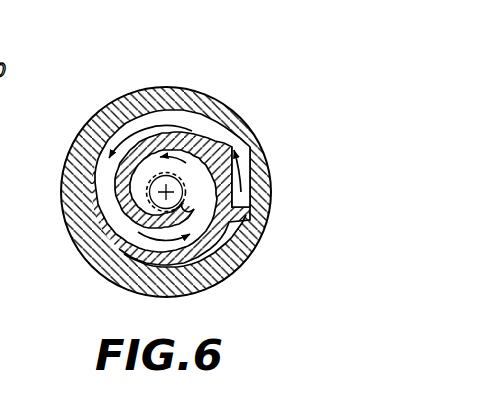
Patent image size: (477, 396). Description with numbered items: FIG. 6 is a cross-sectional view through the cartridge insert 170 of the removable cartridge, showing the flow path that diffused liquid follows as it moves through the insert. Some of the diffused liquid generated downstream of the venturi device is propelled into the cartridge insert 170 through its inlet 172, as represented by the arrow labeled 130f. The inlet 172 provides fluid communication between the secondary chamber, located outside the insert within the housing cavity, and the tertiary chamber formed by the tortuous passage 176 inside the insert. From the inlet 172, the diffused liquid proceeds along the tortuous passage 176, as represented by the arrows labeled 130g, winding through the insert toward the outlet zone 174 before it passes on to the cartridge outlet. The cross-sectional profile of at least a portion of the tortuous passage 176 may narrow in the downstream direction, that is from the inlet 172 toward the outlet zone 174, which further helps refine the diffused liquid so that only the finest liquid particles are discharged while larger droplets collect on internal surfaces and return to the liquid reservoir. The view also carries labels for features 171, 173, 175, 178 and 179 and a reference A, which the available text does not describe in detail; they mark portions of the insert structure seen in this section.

The cartridge insert 170 is at (269, 88).
The housing 171 is at (82, 193).
The inlet 172 is at (278, 173).
The spiral wall 173 is at (258, 150).
The outlet zone 174 is at (143, 187).
The central shaft 175 is at (118, 213).
The tortuous passage 176 is at (228, 145).
The outer flow channel 178 is at (189, 121).
The inner flow channel 179 is at (200, 212).
The arrow 130f is at (272, 193).
The arrows 130g is at (187, 150).
The axis A is at (167, 193).